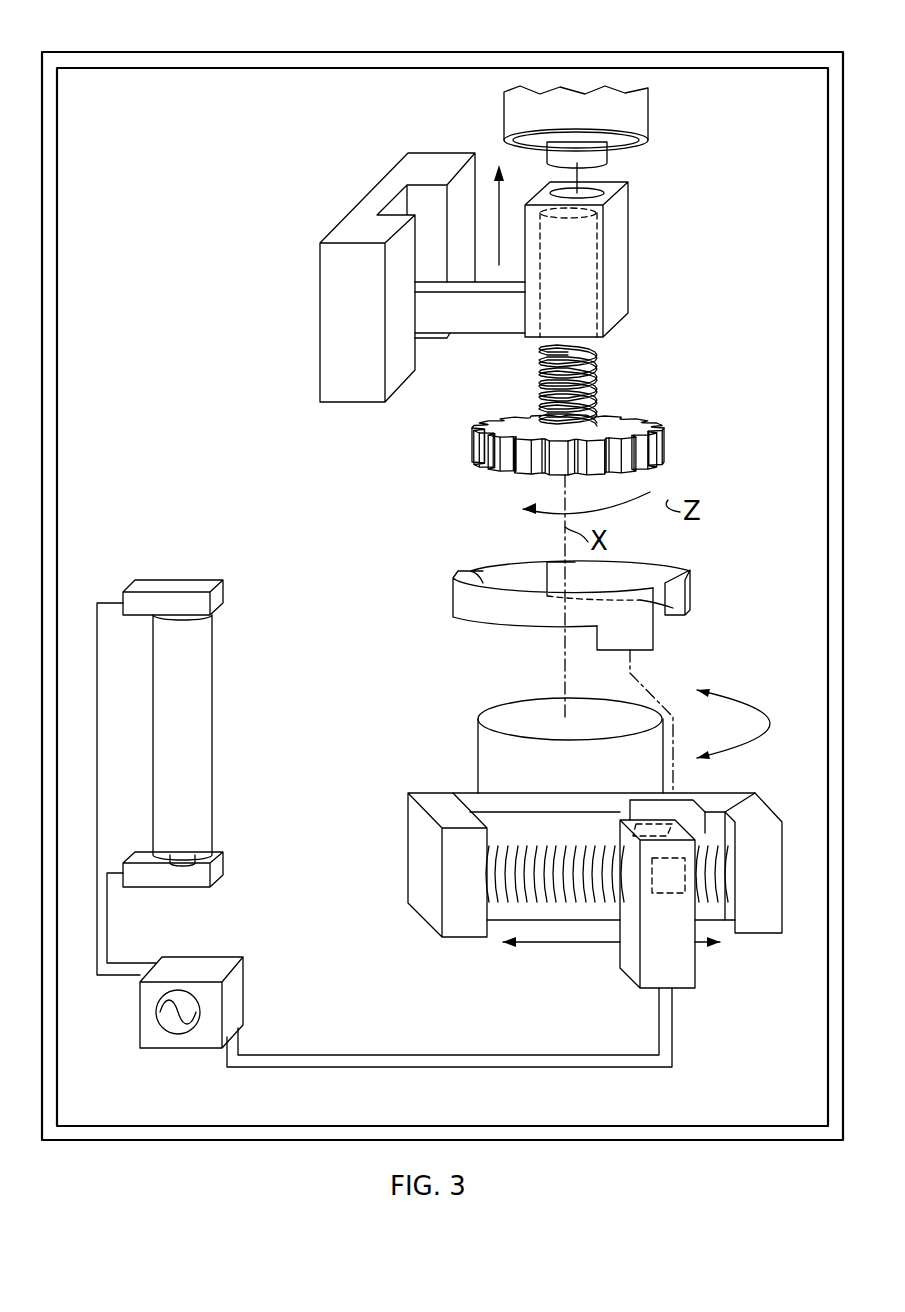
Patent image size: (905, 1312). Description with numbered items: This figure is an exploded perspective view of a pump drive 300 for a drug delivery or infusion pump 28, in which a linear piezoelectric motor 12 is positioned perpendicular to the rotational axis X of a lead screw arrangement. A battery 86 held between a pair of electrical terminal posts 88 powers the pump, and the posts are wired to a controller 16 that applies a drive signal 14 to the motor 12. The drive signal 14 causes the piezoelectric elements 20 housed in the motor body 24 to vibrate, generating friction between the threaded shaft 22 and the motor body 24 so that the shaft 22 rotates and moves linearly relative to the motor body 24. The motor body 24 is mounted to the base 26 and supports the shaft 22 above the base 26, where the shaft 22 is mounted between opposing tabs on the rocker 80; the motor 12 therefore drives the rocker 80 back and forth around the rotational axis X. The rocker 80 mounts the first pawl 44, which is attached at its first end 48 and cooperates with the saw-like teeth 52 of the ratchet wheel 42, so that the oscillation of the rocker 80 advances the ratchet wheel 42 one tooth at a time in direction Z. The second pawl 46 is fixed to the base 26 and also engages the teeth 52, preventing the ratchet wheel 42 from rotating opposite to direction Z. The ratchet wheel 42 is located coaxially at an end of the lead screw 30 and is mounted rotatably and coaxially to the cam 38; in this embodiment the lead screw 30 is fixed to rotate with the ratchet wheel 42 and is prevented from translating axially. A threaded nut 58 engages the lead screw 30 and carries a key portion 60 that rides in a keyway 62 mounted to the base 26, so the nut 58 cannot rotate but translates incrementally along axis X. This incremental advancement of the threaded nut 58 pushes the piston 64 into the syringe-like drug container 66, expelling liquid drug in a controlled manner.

The infusion pump 28 is at (164, 52).
The pump drive 300 is at (183, 168).
The drug container 66 is at (648, 116).
The piston 64 is at (608, 156).
The threaded nut 58 is at (620, 255).
The keyway 62 is at (350, 227).
The key portion 60 is at (490, 325).
The lead screw 30 is at (597, 370).
The ratchet wheel 42 is at (663, 443).
The teeth 52 is at (483, 445).
The first pawl 44 is at (453, 586).
The second pawl 46 is at (693, 590).
The first end 48 is at (645, 633).
The cam 38 is at (502, 712).
The rocker 80 is at (408, 856).
The shaft 22 is at (542, 817).
The motor body 24 is at (690, 970).
The piezoelectric elements 20 is at (645, 818).
The motor 12 is at (618, 957).
The electrical terminal posts 88 is at (180, 580).
The battery 86 is at (198, 742).
The controller 16 is at (245, 997).
The drive signal 14 is at (175, 1030).
The base 26 is at (104, 1104).